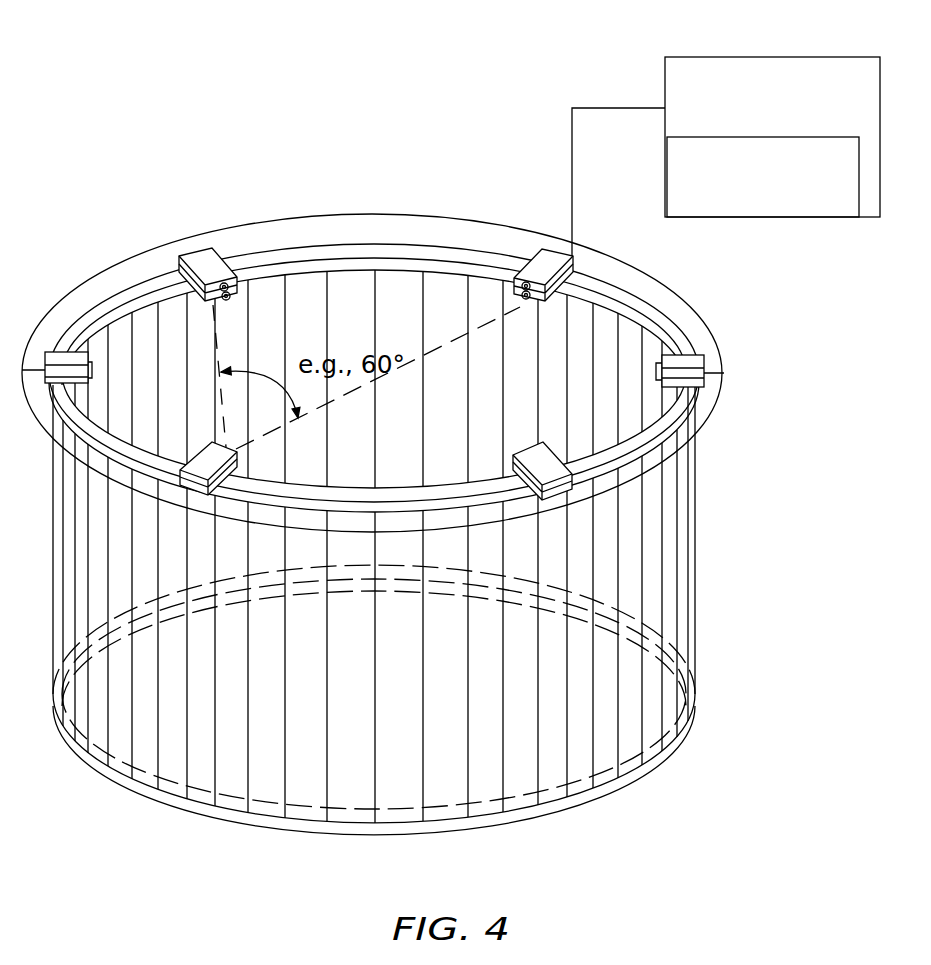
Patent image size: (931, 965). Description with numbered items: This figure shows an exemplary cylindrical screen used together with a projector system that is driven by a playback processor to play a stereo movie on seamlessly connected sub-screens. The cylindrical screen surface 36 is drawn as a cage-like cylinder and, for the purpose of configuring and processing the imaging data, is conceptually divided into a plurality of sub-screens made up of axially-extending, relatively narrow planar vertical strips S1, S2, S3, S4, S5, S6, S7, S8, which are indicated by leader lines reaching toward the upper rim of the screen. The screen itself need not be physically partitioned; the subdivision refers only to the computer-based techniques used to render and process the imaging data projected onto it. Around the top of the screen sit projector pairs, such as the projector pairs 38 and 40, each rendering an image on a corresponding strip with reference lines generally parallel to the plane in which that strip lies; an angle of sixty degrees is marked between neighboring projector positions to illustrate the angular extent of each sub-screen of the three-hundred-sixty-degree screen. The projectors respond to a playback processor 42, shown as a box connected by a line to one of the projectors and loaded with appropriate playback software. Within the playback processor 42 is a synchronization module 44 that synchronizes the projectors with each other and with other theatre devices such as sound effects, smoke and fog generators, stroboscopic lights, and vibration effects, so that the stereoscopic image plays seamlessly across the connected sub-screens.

The cylindrical screen surface 36 is at (697, 588).
The projector pair 38 is at (373, 326).
The projector pair 40 is at (545, 467).
The playback processor 42 is at (778, 57).
The synchronization module 44 is at (818, 217).
The vertical strip S1 is at (515, 332).
The vertical strip S2 is at (495, 312).
The vertical strip S3 is at (457, 300).
The vertical strip S4 is at (415, 287).
The vertical strip S5 is at (333, 287).
The vertical strip S6 is at (292, 298).
The vertical strip S7 is at (252, 312).
The vertical strip S8 is at (248, 335).